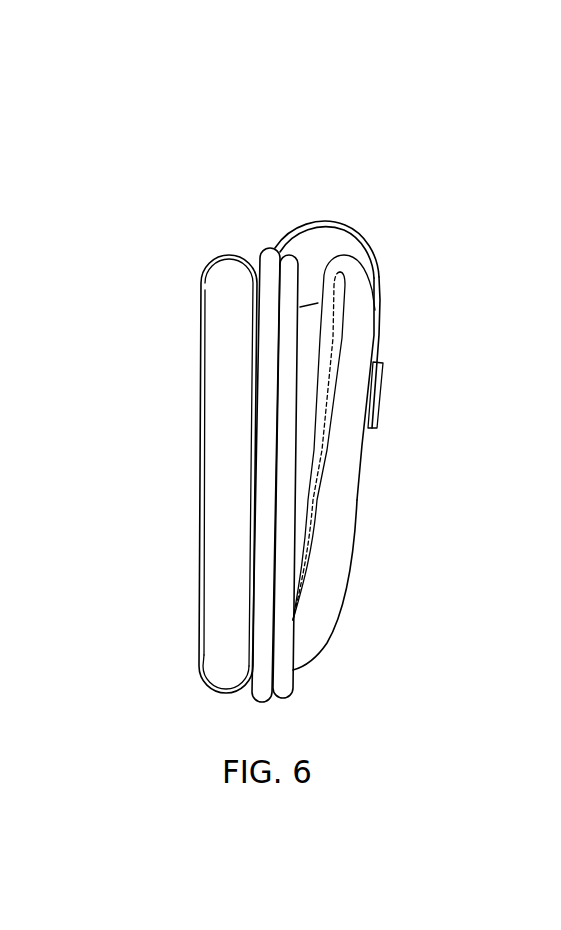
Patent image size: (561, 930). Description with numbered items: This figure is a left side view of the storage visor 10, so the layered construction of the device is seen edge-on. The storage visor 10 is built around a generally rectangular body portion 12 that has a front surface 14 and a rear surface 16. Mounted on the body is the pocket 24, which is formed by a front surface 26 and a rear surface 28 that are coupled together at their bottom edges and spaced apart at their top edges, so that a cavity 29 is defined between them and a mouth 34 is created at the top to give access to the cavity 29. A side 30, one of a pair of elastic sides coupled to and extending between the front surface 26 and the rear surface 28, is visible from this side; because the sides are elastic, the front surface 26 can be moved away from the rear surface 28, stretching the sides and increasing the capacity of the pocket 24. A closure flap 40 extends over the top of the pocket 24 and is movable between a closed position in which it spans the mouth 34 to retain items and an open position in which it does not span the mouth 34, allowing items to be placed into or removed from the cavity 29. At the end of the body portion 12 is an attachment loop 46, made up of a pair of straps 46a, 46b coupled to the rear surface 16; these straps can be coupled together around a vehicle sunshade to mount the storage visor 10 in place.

The storage visor 10 is at (301, 183).
The body portion 12 is at (253, 690).
The front surface 14 is at (273, 640).
The rear surface 16 is at (250, 627).
The pocket 24 is at (340, 492).
The front surface 26 is at (342, 407).
The rear surface 28 is at (287, 385).
The cavity 29 is at (315, 257).
The side 30 is at (308, 325).
The mouth 34 is at (325, 268).
The closure flap 40 is at (362, 251).
The attachment loop 46 is at (212, 258).
The strap 46a is at (200, 287).
The strap 46b is at (202, 680).